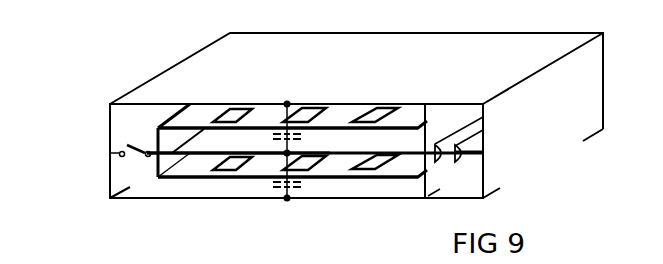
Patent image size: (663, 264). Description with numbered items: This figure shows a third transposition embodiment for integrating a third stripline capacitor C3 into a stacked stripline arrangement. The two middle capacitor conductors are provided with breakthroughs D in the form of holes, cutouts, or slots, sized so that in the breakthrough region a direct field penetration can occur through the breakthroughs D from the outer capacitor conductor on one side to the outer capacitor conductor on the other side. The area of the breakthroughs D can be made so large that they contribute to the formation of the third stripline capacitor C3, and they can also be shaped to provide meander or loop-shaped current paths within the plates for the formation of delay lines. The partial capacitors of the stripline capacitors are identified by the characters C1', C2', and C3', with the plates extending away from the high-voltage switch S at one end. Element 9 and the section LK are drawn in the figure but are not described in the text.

The breakthroughs D is at (306, 116).
The ground/coupling element 9 is at (277, 188).
The high-voltage switch S is at (131, 155).
The laser/coupling unit LK is at (454, 151).
The partial capacitor C1' is at (197, 154).
The partial capacitor C2' is at (173, 154).
The partial capacitor C3' is at (520, 151).
The third stripline capacitor C3 is at (564, 150).